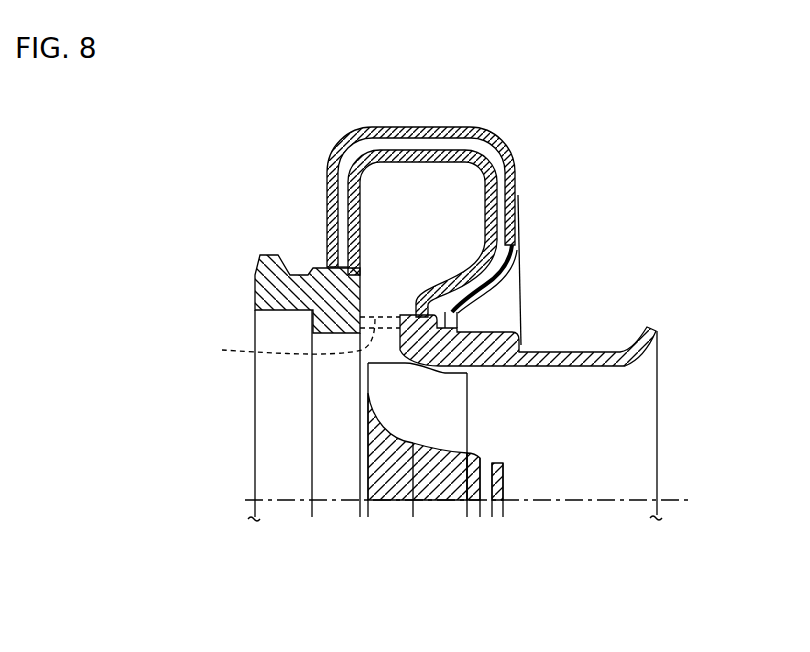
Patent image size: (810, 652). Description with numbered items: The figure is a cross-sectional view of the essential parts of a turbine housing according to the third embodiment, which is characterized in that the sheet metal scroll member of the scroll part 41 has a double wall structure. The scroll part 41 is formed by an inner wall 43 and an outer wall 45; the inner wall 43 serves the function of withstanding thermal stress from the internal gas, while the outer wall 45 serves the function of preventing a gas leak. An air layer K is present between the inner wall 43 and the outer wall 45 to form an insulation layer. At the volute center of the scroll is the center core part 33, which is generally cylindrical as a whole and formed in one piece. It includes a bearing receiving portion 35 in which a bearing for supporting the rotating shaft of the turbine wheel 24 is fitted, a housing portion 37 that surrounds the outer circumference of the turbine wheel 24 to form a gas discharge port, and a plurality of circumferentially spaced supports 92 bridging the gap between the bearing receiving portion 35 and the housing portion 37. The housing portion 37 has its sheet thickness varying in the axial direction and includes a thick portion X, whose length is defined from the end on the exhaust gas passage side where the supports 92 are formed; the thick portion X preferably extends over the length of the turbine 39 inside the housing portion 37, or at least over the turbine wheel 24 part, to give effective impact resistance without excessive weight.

The scroll part 41 is at (451, 191).
The outer wall 45 is at (510, 150).
The inner wall 43 is at (498, 195).
The air layer K is at (343, 151).
The bearing receiving portion 35 is at (288, 255).
The supports 92 is at (296, 341).
The housing portion 37 is at (488, 332).
The center core part 33 is at (476, 310).
The thick portion X is at (497, 355).
The turbine wheel 24 is at (460, 420).
The turbine 39 is at (376, 524).